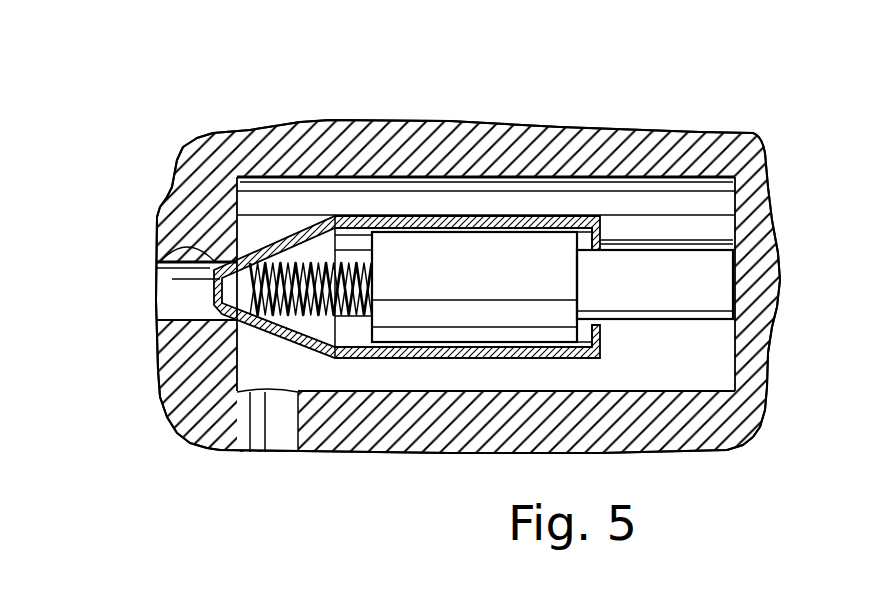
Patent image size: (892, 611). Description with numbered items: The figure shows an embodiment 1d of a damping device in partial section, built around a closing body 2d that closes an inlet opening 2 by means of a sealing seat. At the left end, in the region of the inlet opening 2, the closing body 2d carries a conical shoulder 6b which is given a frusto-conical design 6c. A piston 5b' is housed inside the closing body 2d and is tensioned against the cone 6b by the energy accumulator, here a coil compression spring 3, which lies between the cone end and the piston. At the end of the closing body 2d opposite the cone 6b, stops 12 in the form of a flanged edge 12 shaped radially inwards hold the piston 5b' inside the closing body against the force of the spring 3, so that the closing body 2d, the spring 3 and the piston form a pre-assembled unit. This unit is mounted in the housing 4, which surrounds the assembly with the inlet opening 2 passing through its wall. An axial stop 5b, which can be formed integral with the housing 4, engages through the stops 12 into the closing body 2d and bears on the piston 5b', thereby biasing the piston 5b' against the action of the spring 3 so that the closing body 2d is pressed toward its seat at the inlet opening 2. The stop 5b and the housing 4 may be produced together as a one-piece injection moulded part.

The embodiment of the damping device 1d is at (716, 89).
The inlet opening 2 is at (172, 310).
The closing body 2d is at (452, 217).
The coil compression spring 3 is at (300, 233).
The housing 4 is at (578, 150).
The axial stop 5b is at (655, 284).
The piston 5b' is at (482, 287).
The conical shoulder 6b is at (172, 262).
The frusto-conical design 6c is at (210, 288).
The flanged edge 12 is at (603, 232).